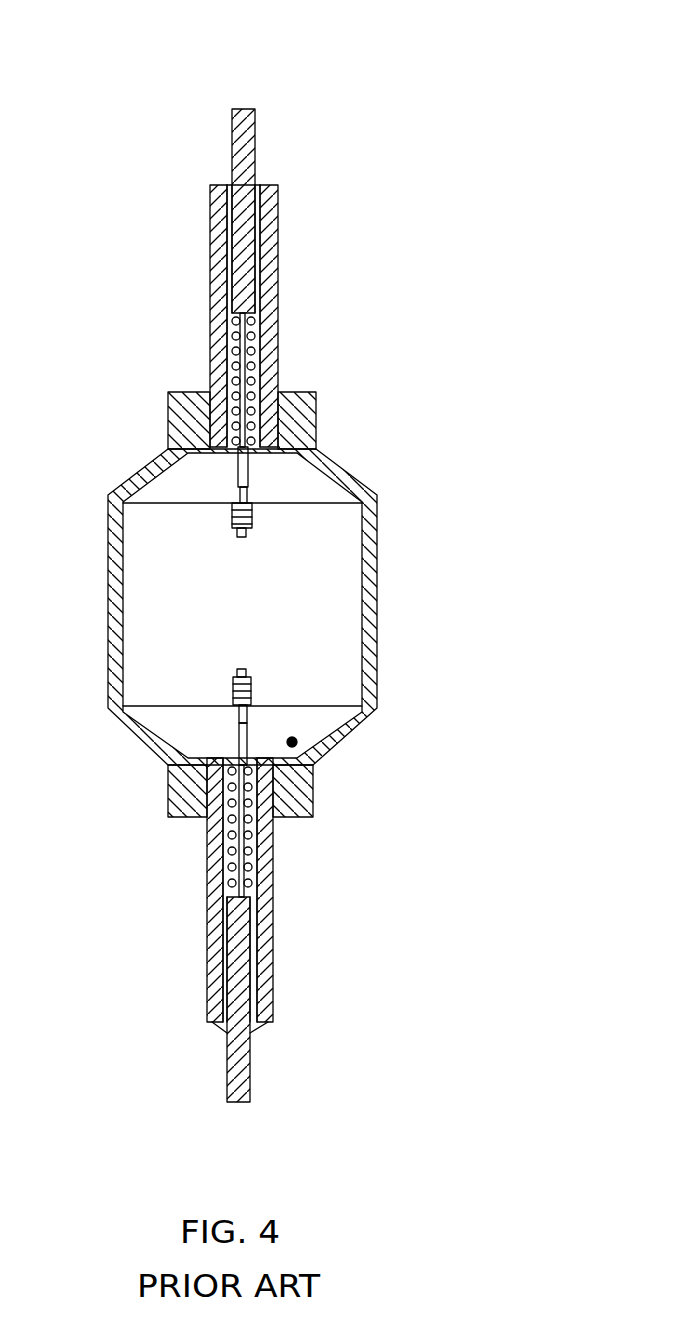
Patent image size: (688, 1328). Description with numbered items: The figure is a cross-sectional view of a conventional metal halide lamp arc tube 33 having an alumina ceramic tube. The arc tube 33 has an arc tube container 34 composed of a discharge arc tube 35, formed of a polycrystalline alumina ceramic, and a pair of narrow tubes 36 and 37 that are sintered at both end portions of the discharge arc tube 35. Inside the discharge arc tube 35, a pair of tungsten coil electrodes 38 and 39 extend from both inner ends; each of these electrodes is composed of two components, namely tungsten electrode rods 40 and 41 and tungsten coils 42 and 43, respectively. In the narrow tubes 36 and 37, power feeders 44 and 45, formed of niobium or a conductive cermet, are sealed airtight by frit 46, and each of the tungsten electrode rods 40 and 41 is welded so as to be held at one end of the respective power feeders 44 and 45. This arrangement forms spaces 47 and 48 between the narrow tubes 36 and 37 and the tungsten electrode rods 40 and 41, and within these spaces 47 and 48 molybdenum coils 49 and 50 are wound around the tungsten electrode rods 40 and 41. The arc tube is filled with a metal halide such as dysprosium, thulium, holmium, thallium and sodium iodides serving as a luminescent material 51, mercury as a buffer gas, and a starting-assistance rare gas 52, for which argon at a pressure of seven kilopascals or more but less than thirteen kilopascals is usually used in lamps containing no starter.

The arc tube 33 is at (340, 108).
The arc tube container 34 is at (347, 447).
The discharge arc tube 35 is at (370, 555).
The narrow tube 36 is at (270, 273).
The narrow tube 37 is at (267, 945).
The tungsten coil electrode 38 is at (262, 518).
The tungsten coil electrode 39 is at (262, 688).
The tungsten electrode rod 40 is at (158, 457).
The tungsten electrode rod 41 is at (237, 735).
The tungsten coil 42 is at (233, 518).
The tungsten coil 43 is at (232, 692).
The power feeder 44 is at (228, 200).
The power feeder 45 is at (233, 982).
The frit 46 is at (263, 213).
The space 47 is at (257, 358).
The space 48 is at (256, 878).
The molybdenum coil 49 is at (232, 337).
The molybdenum coil 50 is at (230, 852).
The luminescent material 51 is at (297, 740).
The starting-assistance rare gas 52 is at (337, 615).